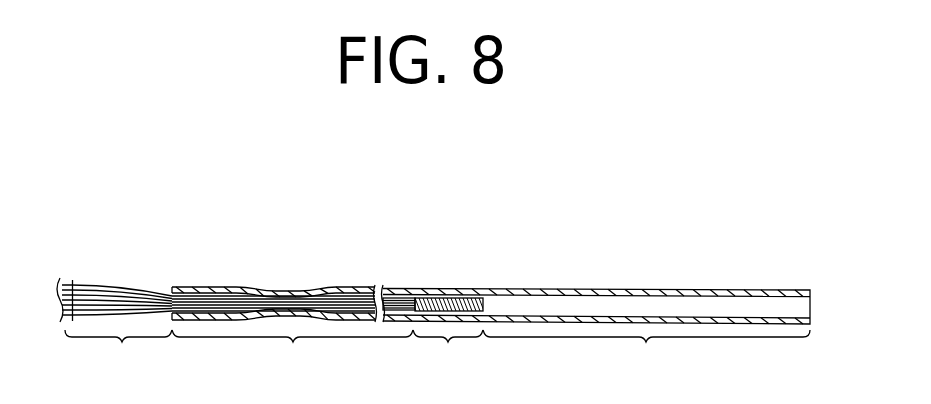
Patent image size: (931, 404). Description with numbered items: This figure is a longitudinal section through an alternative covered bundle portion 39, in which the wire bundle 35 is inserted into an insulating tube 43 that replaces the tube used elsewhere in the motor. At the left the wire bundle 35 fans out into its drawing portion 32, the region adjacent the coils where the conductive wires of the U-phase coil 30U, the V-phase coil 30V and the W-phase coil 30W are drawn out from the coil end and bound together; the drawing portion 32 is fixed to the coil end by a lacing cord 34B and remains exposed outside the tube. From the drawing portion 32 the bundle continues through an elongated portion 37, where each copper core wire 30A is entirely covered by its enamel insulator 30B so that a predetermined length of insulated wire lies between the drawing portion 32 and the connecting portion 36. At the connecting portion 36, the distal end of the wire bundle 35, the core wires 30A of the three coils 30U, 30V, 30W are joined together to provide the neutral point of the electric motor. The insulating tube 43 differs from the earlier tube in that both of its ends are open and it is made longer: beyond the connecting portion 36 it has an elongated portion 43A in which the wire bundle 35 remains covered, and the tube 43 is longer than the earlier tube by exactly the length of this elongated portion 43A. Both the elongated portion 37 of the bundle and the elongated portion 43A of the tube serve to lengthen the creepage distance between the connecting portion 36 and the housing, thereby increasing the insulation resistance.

The covered bundle portion 39 is at (433, 284).
The lacing cord 34B is at (73, 280).
The wire bundle 35 is at (131, 277).
The drawing portion 32 is at (118, 351).
The elongated portion 37 is at (292, 329).
The W-phase coil 30W is at (209, 305).
The V-phase coil 30V is at (278, 302).
The U-phase coil 30U is at (337, 302).
The insulator 30B is at (391, 298).
The core wire 30A is at (468, 299).
The connecting portion 36 is at (448, 351).
The insulating tube 43 is at (613, 290).
The elongated portion 43A is at (646, 351).